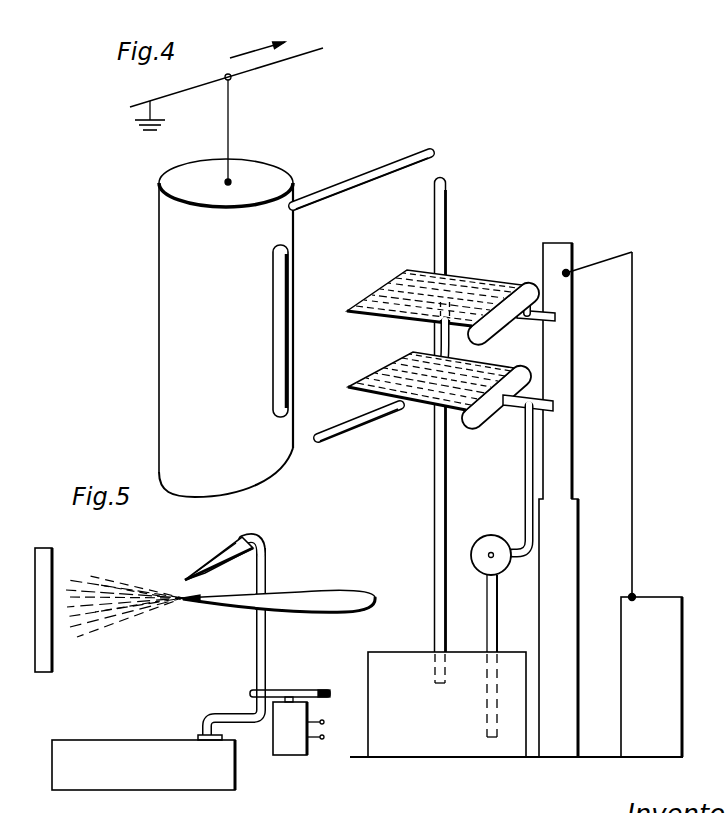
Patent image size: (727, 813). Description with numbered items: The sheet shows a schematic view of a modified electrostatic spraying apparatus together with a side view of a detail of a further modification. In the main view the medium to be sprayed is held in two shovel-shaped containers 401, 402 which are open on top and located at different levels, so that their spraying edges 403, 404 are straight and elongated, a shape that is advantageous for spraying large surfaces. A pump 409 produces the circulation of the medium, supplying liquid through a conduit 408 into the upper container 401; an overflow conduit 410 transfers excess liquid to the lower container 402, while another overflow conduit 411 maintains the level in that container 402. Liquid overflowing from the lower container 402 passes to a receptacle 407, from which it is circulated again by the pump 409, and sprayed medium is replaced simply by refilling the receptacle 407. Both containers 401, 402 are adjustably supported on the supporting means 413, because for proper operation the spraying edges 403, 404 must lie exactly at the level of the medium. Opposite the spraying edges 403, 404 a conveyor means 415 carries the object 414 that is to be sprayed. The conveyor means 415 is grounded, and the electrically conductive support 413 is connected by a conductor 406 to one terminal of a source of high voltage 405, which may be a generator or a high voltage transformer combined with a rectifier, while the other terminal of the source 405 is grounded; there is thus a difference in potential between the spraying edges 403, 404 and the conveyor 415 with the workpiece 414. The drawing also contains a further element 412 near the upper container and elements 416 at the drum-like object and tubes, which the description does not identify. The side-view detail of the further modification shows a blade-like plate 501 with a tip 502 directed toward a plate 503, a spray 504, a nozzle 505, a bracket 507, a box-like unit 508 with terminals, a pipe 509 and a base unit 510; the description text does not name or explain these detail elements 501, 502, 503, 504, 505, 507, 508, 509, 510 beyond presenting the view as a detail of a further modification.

In FIG. 4, the container 401 is at (517, 280).
In FIG. 4, the container 402 is at (430, 414).
In FIG. 4, the spraying edge 403 is at (400, 275).
In FIG. 4, the spraying edge 404 is at (387, 370).
In FIG. 4, the source of high voltage 405 is at (658, 603).
In FIG. 4, the conductor 406 is at (632, 453).
In FIG. 4, the receptacle 407 is at (390, 665).
In FIG. 4, the conduit 408 is at (527, 488).
In FIG. 4, the pump 409 is at (483, 543).
In FIG. 4, the overflow conduit 410 is at (440, 328).
In FIG. 4, the overflow conduit 411 is at (437, 532).
In FIG. 4, the electrode assembly 412 is at (482, 258).
In FIG. 4, the supporting means 413 is at (563, 452).
In FIG. 4, the object 414 is at (265, 465).
In FIG. 4, the conveyor means 415 is at (262, 70).
In FIG. 4, the guide tube / slot 416 is at (337, 185).
In FIG. 5, the blade plate 501 is at (293, 598).
In FIG. 5, the nozzle tip 502 is at (193, 602).
In FIG. 5, the target plate 503 is at (52, 562).
In FIG. 5, the spray 504 is at (102, 605).
In FIG. 5, the nozzle 505 is at (220, 555).
In FIG. 5, the bracket 507 is at (283, 690).
In FIG. 5, the control unit 508 is at (295, 748).
In FIG. 5, the supply pipe 509 is at (257, 658).
In FIG. 5, the base unit 510 is at (87, 743).